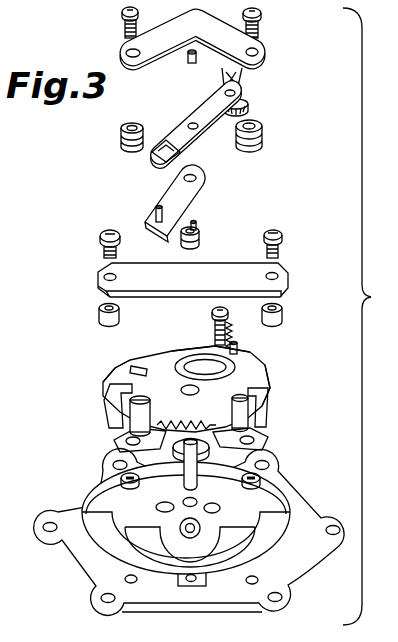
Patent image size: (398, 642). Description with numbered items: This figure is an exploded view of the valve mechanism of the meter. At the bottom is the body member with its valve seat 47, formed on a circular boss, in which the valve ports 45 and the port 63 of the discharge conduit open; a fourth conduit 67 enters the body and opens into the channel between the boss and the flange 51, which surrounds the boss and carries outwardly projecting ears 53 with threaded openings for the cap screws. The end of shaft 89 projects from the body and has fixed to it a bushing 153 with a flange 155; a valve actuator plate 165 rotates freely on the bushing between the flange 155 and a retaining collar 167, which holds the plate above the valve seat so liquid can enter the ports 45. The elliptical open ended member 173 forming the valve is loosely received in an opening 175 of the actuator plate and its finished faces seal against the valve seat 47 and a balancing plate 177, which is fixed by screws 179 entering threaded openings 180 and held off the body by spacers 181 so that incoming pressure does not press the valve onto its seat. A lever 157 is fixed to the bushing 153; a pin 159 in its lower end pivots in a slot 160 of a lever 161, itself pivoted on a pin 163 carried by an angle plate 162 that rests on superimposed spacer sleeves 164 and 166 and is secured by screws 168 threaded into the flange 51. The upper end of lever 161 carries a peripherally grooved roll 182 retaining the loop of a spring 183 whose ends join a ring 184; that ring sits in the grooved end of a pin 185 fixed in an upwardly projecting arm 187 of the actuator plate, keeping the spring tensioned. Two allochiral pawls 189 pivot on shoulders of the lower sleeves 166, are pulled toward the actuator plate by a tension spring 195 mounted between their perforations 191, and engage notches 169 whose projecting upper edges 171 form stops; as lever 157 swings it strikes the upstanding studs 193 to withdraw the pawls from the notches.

The screws 168 is at (125, 22).
The angle plate 162 is at (264, 45).
The pin 163 is at (172, 62).
The spring 183 is at (218, 74).
The peripherally grooved roll 182 is at (250, 88).
The lever 161 is at (200, 112).
The slot 160 is at (157, 166).
The spacer sleeves 164 is at (120, 148).
The lever 157 is at (207, 190).
The flange 155 is at (173, 237).
The pin 159 is at (153, 216).
The shaft 89 is at (200, 230).
The bushing 153 is at (206, 240).
The screws 179 is at (105, 243).
The balancing plate 177 is at (98, 275).
The spacers 181 is at (100, 312).
The pin 185 is at (213, 315).
The ring 184 is at (237, 323).
The valve actuator plate 165 is at (250, 370).
The upwardly projecting arm 187 is at (208, 338).
The elliptical open ended member 173 is at (168, 350).
The opening 175 is at (262, 388).
The upper edges 171 is at (131, 370).
The notches 169 is at (128, 375).
The studs 193 is at (112, 424).
The perforations 191 is at (118, 440).
The tension spring 195 is at (175, 408).
The allochiral pawls 189 is at (129, 407).
The flange 51 is at (80, 556).
The ears 53 is at (40, 540).
The threaded openings 180 is at (103, 500).
The fourth conduit 67 is at (194, 583).
The valve seat 47 is at (186, 518).
The valve ports 45 is at (163, 503).
The port 63 is at (196, 503).
The spacer sleeves 166 is at (112, 480).
The retaining collar 167 is at (208, 450).